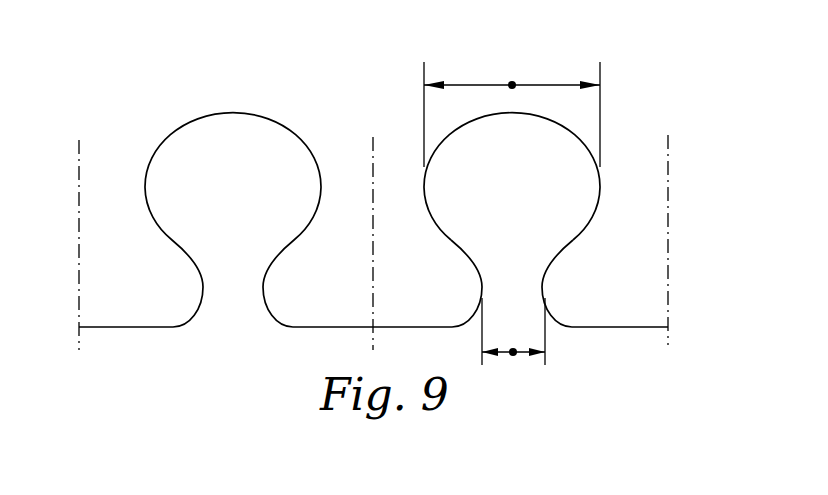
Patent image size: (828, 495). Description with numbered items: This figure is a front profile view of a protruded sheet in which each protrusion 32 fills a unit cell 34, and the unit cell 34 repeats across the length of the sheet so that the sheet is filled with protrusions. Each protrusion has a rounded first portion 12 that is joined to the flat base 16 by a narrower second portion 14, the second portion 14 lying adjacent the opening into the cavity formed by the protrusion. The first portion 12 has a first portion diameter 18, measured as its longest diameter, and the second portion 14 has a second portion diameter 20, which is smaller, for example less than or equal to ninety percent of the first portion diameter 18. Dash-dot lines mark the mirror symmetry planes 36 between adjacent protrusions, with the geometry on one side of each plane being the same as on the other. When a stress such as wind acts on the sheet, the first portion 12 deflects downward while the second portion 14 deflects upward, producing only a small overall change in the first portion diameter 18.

The first portion 12 is at (478, 120).
The second portion 14 is at (481, 280).
The base 16 is at (606, 326).
The first portion diameter 18 is at (512, 85).
The second portion diameter 20 is at (513, 352).
The protrusion 32 is at (549, 195).
The unit cell 34 is at (166, 142).
The mirror symmetry plane 36 is at (668, 210).